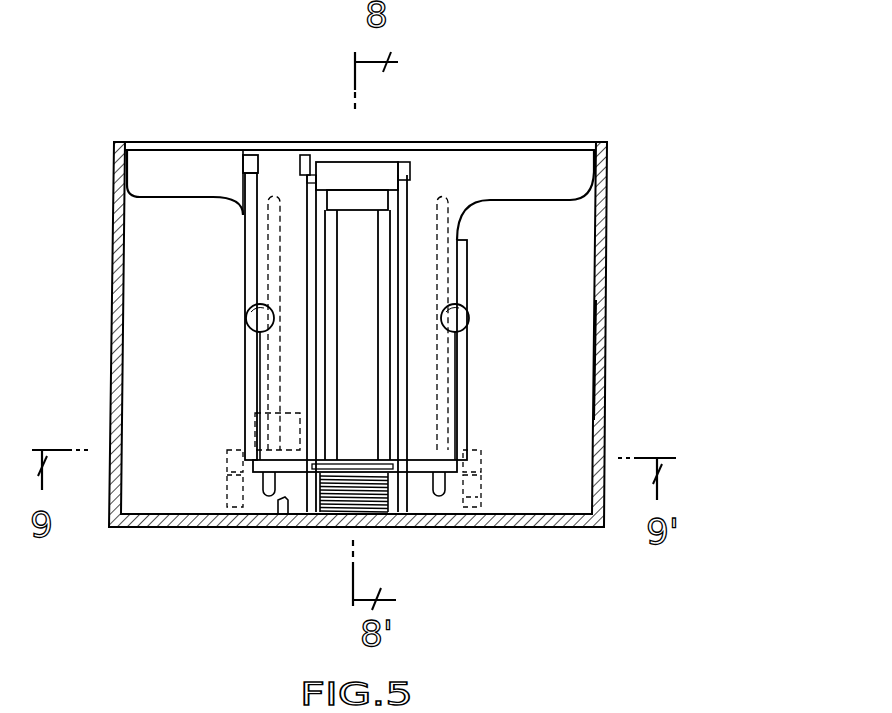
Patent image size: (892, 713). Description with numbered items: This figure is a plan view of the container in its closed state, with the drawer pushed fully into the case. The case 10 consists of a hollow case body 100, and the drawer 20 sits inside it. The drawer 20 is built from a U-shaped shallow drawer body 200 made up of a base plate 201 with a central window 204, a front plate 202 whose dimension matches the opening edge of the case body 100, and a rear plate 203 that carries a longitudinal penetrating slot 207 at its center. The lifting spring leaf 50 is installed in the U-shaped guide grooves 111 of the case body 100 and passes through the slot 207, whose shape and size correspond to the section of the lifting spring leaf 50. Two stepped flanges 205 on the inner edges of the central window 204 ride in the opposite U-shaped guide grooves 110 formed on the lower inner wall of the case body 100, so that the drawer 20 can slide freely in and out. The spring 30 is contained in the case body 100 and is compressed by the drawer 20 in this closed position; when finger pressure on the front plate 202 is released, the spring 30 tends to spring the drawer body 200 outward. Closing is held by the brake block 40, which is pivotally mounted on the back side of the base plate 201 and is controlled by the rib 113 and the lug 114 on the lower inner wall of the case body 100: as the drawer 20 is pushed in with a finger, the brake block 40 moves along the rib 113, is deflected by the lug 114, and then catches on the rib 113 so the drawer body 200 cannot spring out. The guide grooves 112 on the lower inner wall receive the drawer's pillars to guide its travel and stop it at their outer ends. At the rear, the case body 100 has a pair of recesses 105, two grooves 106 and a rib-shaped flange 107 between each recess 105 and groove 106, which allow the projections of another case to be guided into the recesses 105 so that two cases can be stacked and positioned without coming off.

The case 10 is at (614, 183).
The case body 100 is at (600, 357).
The drawer 20 is at (592, 142).
The drawer body 200 is at (550, 148).
The front plate 202 is at (492, 150).
The rib 113 is at (258, 253).
The base plate 201 is at (267, 182).
The U-shaped guide grooves 111 is at (313, 195).
The stepped flanges 205 is at (403, 160).
The central window 204 is at (330, 158).
The lifting spring leaf 50 is at (373, 162).
The U-shaped guide grooves 110 is at (330, 233).
The longitudinal penetrating slot 207 is at (403, 473).
The rear plate 203 is at (412, 474).
The spring 30 is at (380, 512).
The guide grooves 112 is at (265, 492).
The lug 114 is at (280, 502).
The brake block 40 is at (262, 424).
The recesses 105 is at (477, 457).
The grooves 106 is at (473, 497).
The rib-shaped flange 107 is at (477, 475).